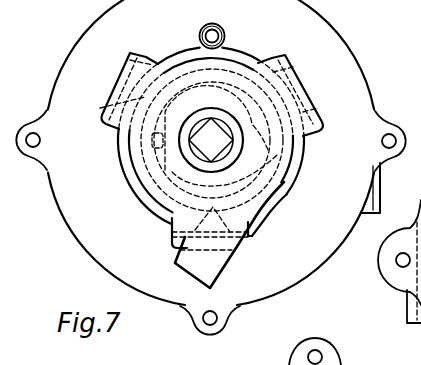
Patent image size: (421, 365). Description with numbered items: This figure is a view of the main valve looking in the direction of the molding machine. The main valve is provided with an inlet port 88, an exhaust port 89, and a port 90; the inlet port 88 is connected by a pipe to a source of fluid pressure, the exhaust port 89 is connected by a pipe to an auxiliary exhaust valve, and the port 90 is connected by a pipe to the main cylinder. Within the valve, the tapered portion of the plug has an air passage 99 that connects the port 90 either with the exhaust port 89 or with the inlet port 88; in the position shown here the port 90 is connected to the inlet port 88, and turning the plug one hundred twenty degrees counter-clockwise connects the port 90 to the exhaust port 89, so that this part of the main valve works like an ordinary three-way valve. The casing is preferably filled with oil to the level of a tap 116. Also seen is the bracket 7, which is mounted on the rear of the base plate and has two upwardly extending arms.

The inlet port 88 is at (132, 53).
The exhaust port 89 is at (285, 55).
The port 90 is at (248, 238).
The bracket 7 is at (217, 267).
The air passage 99 is at (160, 172).
The tap 116 is at (380, 192).